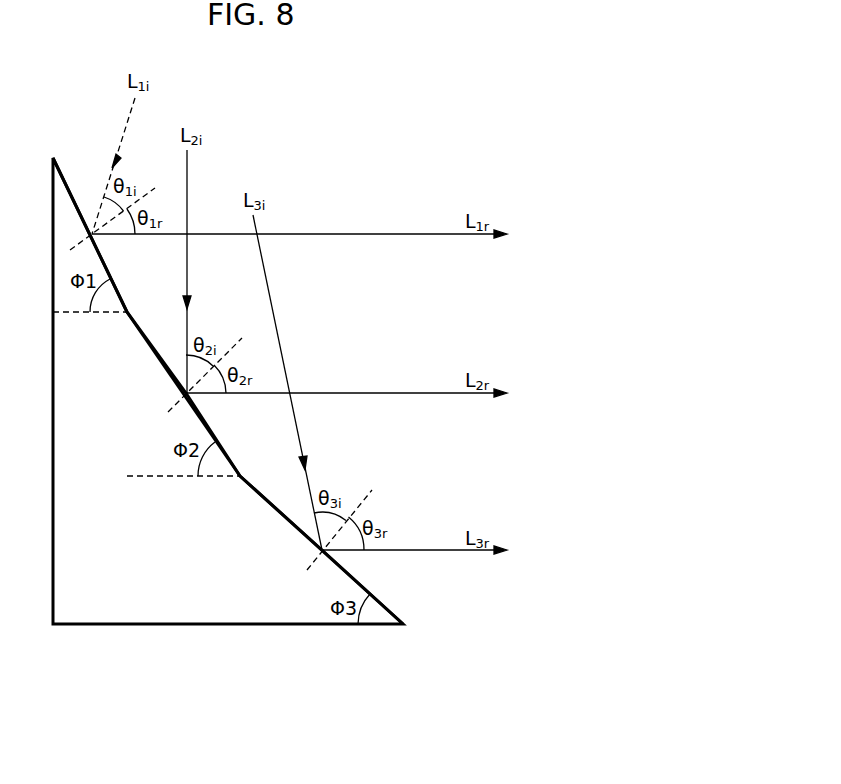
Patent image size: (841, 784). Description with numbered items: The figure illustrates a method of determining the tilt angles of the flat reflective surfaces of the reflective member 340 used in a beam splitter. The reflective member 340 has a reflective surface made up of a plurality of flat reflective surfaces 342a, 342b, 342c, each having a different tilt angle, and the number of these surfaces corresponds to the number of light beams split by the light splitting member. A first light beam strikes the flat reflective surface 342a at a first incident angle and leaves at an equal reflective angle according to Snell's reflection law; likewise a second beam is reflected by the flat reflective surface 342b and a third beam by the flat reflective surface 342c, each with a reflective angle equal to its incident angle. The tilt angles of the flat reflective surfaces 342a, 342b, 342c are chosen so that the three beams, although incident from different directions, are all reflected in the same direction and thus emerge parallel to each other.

The reflective member 340 is at (110, 629).
The flat reflective surface 342a is at (70, 190).
The flat reflective surface 342b is at (153, 348).
The flat reflective surface 342c is at (275, 508).